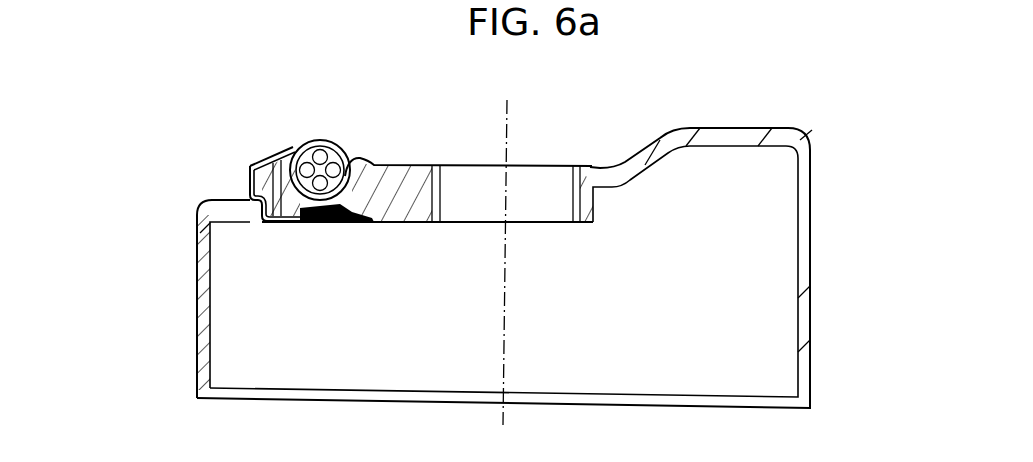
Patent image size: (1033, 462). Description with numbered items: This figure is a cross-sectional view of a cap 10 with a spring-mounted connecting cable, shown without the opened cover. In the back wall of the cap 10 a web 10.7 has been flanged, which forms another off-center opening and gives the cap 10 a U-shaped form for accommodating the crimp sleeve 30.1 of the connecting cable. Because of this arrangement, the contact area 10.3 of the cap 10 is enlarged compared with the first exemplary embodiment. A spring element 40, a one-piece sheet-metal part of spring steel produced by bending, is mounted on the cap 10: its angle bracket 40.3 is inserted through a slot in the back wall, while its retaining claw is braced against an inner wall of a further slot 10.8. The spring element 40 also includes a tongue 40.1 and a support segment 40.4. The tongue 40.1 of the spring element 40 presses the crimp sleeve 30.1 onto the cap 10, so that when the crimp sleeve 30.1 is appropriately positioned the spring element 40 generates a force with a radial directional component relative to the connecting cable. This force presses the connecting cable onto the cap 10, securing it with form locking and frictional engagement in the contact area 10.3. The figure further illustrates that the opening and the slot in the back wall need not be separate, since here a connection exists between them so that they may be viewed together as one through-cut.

The cap 10 is at (810, 312).
The contact area 10.3 is at (253, 193).
The web 10.7 is at (267, 223).
The further slot 10.8 is at (355, 222).
The crimp sleeve 30.1 is at (320, 139).
The spring element 40 is at (201, 167).
The tongue 40.1 is at (267, 150).
The angle bracket 40.3 is at (293, 223).
The support segment 40.4 is at (250, 170).